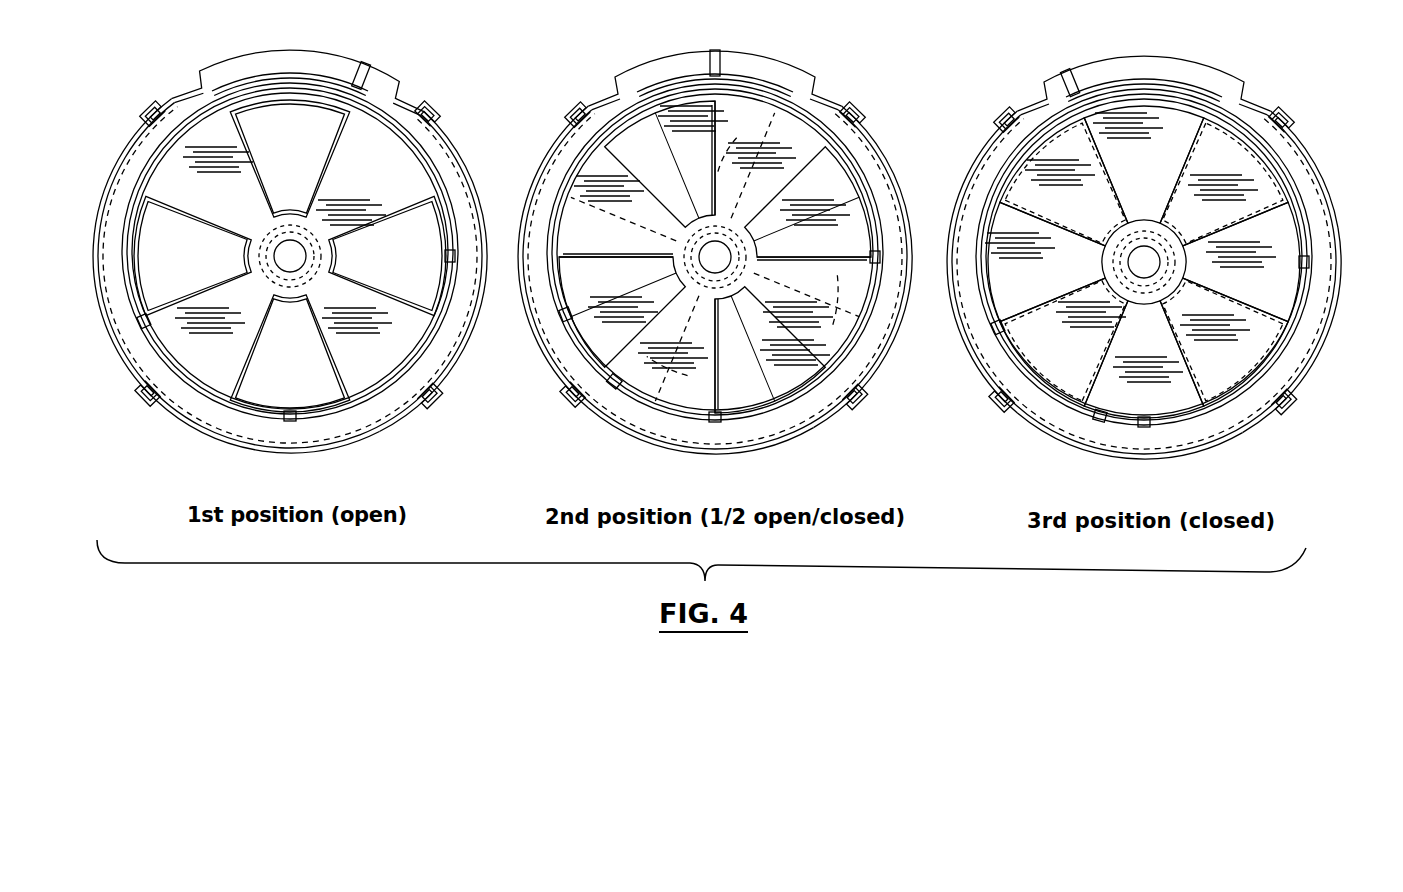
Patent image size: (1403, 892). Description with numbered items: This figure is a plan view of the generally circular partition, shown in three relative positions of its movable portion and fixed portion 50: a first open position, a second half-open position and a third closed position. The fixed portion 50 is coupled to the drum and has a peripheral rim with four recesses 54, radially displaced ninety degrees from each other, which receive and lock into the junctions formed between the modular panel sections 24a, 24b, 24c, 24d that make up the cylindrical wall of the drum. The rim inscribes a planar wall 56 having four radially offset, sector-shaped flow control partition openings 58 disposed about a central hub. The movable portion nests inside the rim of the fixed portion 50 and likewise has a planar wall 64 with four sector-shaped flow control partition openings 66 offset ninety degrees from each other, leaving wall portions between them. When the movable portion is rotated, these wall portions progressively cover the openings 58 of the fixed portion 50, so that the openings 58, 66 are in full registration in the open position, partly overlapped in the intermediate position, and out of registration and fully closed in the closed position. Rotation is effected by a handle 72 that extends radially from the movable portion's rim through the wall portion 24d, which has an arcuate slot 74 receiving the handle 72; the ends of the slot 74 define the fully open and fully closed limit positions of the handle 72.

The cylindrical wall portion 24a is at (103, 183).
The cylindrical wall portion 24b is at (262, 456).
The cylindrical wall portion 24c is at (468, 334).
The cylindrical wall portion 24d is at (405, 82).
The fixed portion 50 is at (122, 314).
The recesses 54 is at (158, 96).
The planar wall 56 is at (1143, 261).
The flow control partition openings 58 is at (715, 257).
The planar wall 64 is at (737, 262).
The flow control partition openings 66 is at (526, 257).
The handle 72 is at (364, 68).
The arcuate slot 74 is at (276, 52).